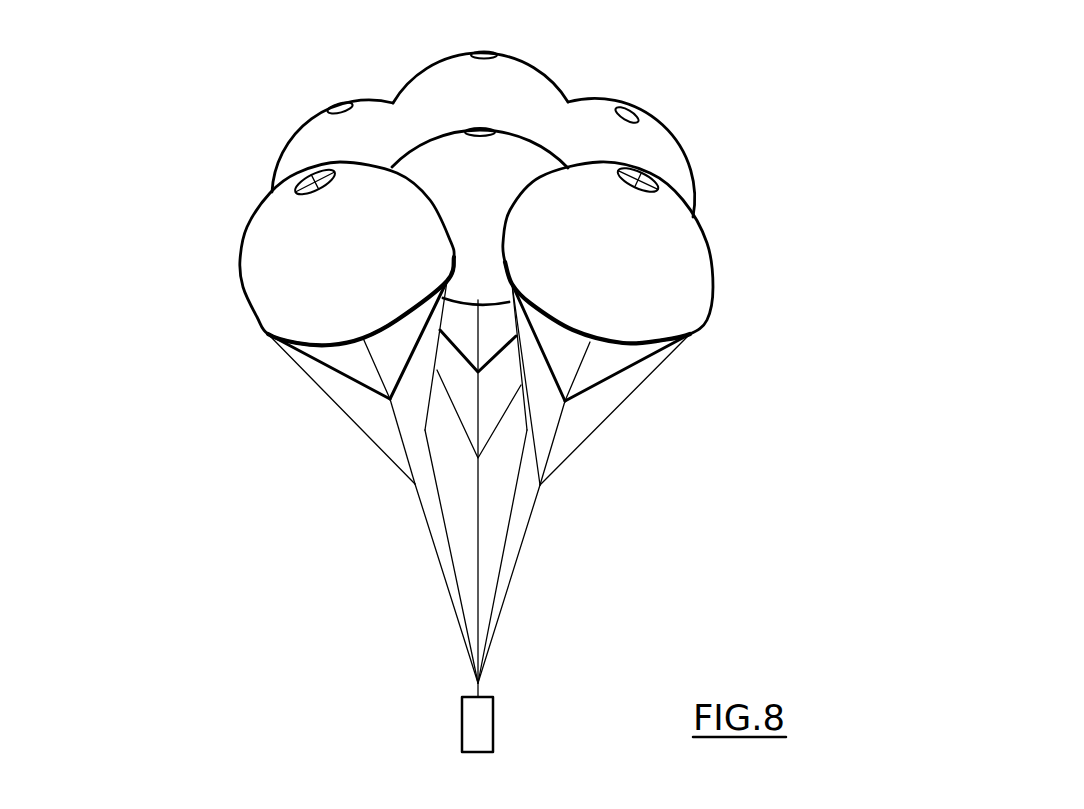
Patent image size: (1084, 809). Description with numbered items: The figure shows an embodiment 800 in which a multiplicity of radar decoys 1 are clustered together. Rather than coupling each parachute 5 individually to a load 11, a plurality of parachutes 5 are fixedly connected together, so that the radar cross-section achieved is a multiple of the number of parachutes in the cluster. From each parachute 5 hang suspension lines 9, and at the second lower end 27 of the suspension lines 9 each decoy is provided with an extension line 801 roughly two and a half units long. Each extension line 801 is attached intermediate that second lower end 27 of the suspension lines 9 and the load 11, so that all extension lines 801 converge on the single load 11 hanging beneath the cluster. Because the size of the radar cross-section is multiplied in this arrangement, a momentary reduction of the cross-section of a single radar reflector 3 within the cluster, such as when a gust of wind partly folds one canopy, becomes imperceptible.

The radar decoy 1 is at (142, 150).
The embodiment 800 is at (758, 81).
The parachute 5 is at (435, 83).
The radar reflector 3 is at (266, 469).
The suspension lines 9 is at (560, 420).
The second lower end 27 is at (478, 458).
The extension line 801 is at (480, 568).
The load 11 is at (493, 717).